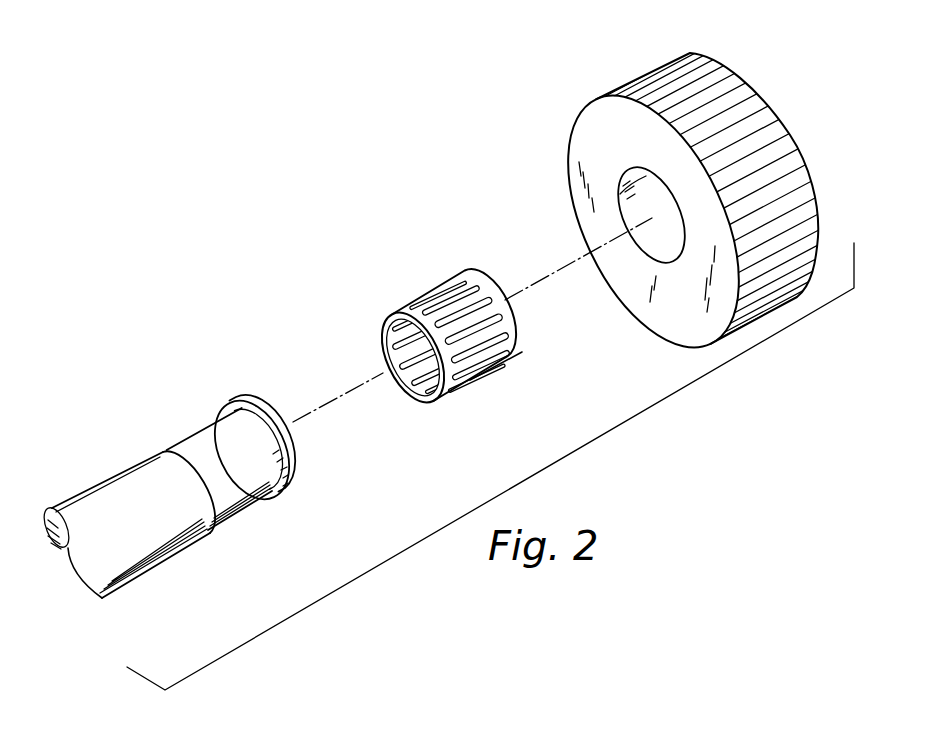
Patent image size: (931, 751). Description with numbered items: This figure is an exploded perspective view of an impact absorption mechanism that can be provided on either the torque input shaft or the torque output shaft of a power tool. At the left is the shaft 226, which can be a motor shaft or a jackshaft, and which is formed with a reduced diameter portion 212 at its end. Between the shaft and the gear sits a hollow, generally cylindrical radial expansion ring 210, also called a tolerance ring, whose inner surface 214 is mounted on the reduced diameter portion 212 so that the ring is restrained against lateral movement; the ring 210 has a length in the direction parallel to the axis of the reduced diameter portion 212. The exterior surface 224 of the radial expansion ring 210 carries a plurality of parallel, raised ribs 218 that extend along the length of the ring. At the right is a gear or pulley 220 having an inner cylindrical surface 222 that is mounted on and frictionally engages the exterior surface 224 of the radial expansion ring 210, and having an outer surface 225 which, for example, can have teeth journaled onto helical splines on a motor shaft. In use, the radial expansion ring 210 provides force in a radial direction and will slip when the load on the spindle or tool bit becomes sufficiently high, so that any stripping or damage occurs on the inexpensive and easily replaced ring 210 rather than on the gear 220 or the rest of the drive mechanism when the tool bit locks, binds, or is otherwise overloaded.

The radial expansion ring 210 is at (429, 304).
The reduced diameter portion 212 is at (221, 426).
The inner surface 214 is at (385, 331).
The raised ribs 218 is at (512, 298).
The gear or pulley 220 is at (702, 200).
The inner cylindrical surface 222 is at (633, 182).
The exterior surface 224 is at (477, 387).
The outer surface 225 is at (722, 76).
The shaft 226 is at (157, 453).